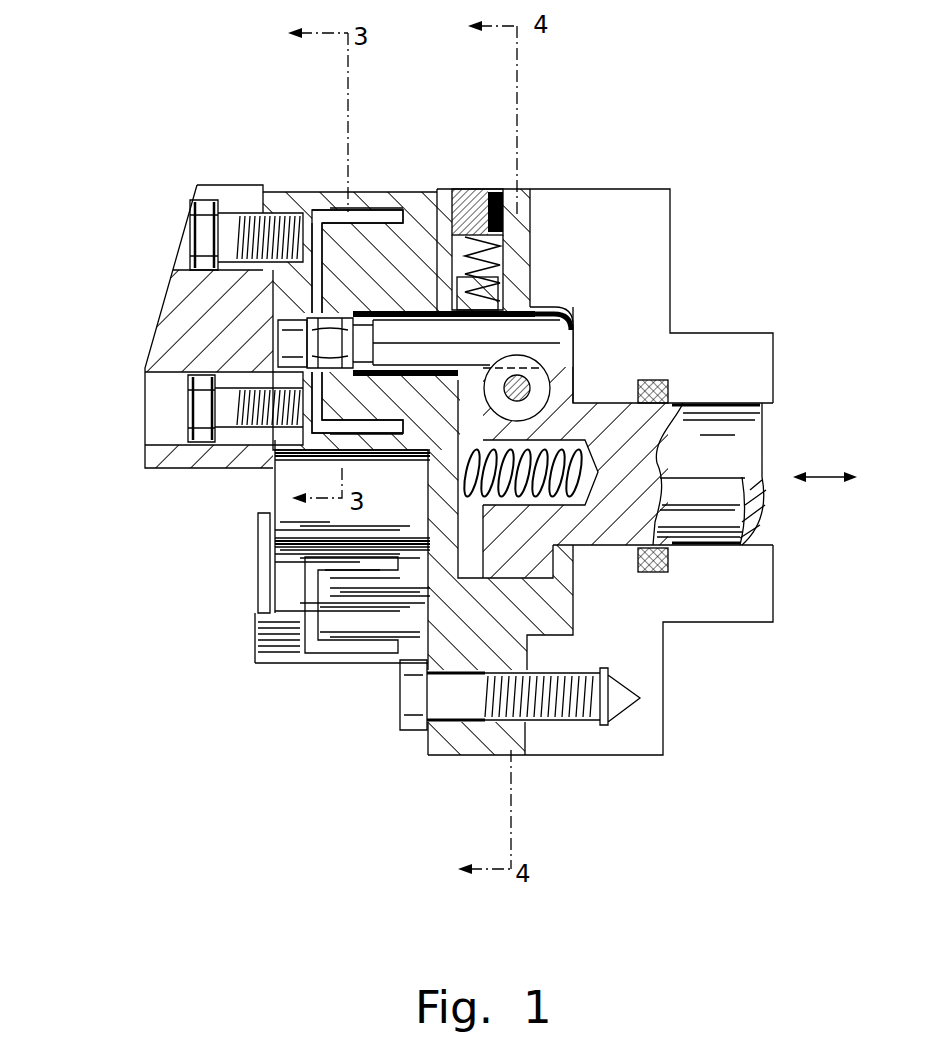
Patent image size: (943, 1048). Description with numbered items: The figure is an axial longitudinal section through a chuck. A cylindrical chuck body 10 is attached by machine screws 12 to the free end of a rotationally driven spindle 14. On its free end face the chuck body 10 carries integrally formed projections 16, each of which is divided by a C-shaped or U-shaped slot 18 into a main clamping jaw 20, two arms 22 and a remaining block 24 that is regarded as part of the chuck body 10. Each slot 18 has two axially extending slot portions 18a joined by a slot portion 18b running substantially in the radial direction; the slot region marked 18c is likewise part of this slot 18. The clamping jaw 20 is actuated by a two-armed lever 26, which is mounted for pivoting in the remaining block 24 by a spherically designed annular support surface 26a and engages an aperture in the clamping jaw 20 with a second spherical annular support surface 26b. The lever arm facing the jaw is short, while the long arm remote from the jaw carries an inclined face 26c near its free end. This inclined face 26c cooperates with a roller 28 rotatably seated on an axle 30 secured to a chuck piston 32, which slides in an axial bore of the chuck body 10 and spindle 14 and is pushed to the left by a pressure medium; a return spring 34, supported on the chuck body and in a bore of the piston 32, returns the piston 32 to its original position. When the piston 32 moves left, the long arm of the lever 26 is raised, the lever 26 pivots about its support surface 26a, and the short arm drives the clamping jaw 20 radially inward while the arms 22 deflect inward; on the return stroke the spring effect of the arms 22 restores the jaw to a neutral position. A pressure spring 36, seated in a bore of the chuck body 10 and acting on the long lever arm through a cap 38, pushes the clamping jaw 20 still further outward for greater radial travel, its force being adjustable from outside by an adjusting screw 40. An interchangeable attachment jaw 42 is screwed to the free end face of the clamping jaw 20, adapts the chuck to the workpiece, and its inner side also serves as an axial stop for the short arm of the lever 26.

The chuck body 10 is at (452, 765).
The machine screws 12 is at (543, 722).
The spindle 14 is at (633, 730).
The projections 16 is at (271, 673).
The slot 18 is at (380, 207).
The axially extending slot portions 18a is at (352, 190).
The radially extending slot portion 18b is at (318, 285).
The lower arm of clip 18c is at (362, 425).
The clamping jaw 20 is at (284, 187).
The arms 22 is at (358, 188).
The remaining block 24 is at (413, 233).
The two-armed lever 26 is at (487, 340).
The spherical annular support surface 26a is at (337, 335).
The second spherical annular support surface 26b is at (277, 352).
The inclined face 26c is at (557, 350).
The roller 28 is at (540, 387).
The axle 30 is at (577, 425).
The chuck piston 32 is at (700, 513).
The return spring 34 is at (573, 550).
The pressure spring 36 is at (500, 268).
The cap 38 is at (498, 290).
The adjusting screw 40 is at (494, 188).
The attachment jaw 42 is at (207, 452).